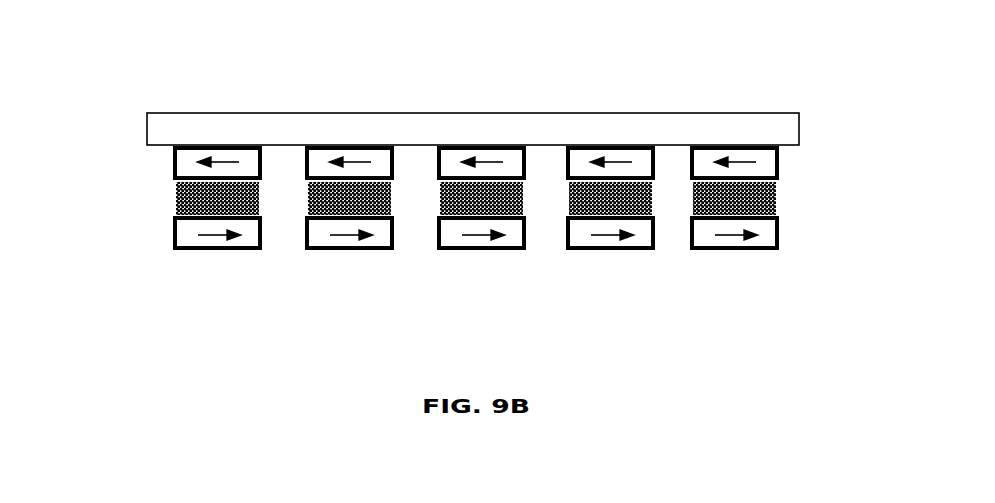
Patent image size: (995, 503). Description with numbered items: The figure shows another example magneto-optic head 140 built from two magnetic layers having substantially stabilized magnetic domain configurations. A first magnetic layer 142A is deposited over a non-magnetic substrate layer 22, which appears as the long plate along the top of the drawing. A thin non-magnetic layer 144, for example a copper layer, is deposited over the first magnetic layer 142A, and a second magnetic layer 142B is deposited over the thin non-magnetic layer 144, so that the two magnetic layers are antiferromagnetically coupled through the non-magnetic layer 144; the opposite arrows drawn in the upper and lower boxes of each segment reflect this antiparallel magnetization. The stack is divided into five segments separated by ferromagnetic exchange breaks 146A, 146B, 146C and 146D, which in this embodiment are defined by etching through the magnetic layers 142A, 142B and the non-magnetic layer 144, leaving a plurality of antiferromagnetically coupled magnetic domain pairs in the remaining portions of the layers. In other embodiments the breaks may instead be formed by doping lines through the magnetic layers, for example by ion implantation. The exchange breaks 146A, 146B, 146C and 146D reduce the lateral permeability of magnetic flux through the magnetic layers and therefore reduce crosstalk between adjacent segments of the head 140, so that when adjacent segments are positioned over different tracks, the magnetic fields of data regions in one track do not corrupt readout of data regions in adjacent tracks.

The magneto-optic head 140 is at (468, 171).
The non-magnetic substrate layer 22 is at (467, 130).
The first magnetic layer 142A is at (150, 165).
The second magnetic layer 142B is at (152, 234).
The thin non-magnetic layer 144 is at (798, 196).
The ferromagnetic exchange break 146A is at (279, 262).
The ferromagnetic exchange break 146B is at (419, 262).
The ferromagnetic exchange break 146C is at (549, 262).
The ferromagnetic exchange break 146D is at (669, 262).